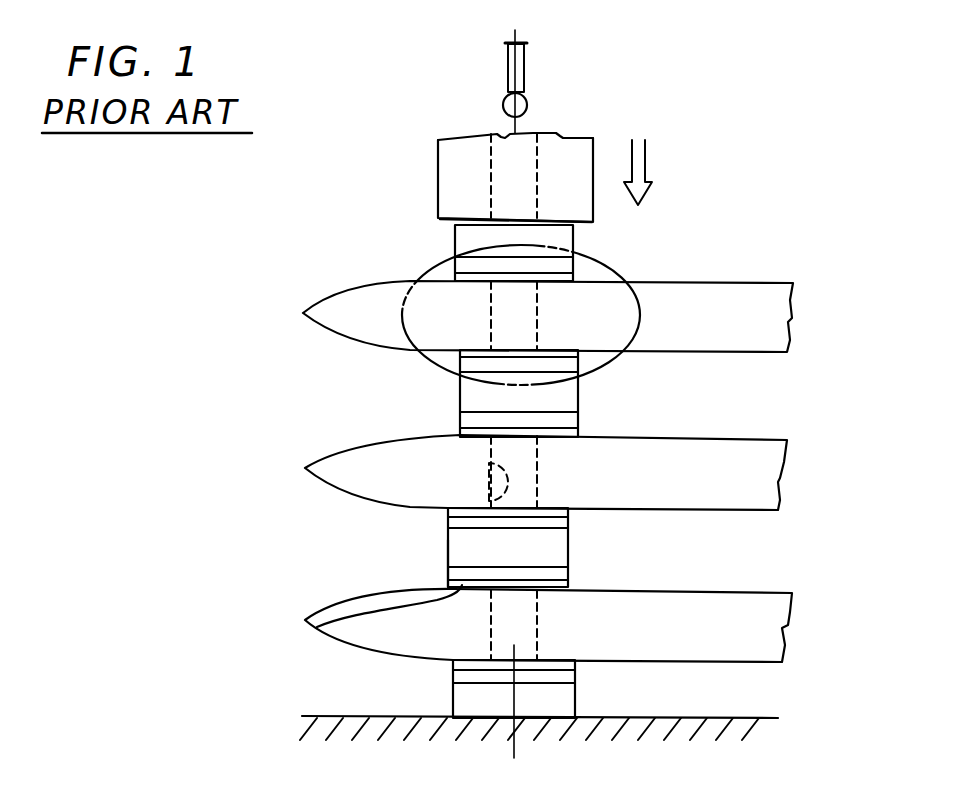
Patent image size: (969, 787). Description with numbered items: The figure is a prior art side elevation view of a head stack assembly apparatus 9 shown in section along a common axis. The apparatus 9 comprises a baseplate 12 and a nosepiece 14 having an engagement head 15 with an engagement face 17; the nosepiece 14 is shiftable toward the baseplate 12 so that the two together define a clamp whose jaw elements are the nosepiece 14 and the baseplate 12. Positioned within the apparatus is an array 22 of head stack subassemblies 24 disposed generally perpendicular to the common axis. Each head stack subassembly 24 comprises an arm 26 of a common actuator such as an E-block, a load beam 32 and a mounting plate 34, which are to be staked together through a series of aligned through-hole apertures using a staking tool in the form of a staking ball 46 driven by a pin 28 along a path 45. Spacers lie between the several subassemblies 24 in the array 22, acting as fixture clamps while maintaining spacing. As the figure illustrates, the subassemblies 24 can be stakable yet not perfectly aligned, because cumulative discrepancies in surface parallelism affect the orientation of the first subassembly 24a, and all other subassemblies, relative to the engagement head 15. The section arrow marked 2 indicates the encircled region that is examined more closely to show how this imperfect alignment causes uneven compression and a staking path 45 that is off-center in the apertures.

The pin 28 is at (524, 60).
The staking ball 46 is at (528, 107).
The nosepiece 14 is at (486, 157).
The engagement head 15 is at (455, 157).
The engagement face 17 is at (443, 225).
The first subassembly 24a is at (573, 238).
The stack assembly apparatus 9 is at (284, 304).
The section line arrow 2 is at (428, 362).
The array 22 is at (568, 468).
The arm 26 is at (520, 562).
The head stack subassembly 24 is at (457, 403).
The path 45 is at (489, 500).
The load beam 32 is at (447, 575).
The mounting plate 34 is at (317, 625).
The baseplate 12 is at (700, 717).